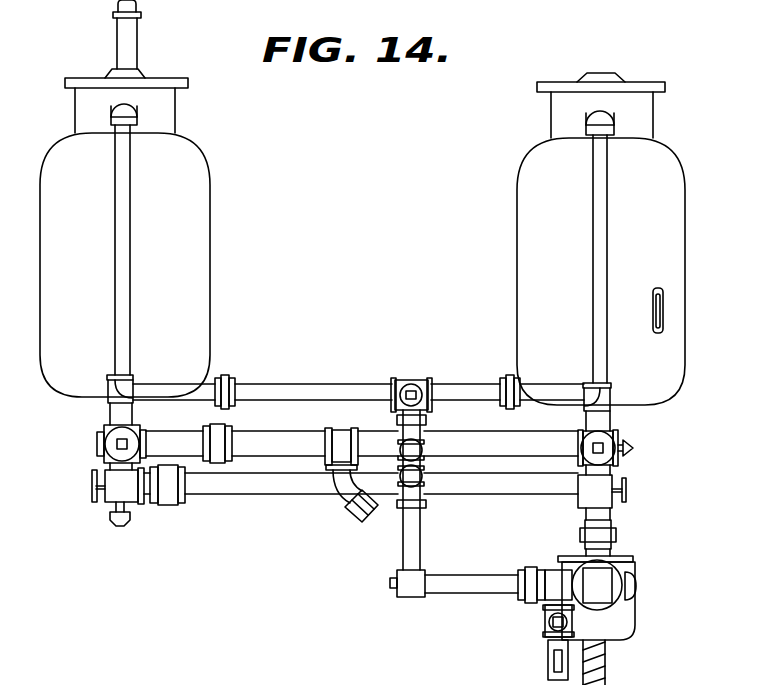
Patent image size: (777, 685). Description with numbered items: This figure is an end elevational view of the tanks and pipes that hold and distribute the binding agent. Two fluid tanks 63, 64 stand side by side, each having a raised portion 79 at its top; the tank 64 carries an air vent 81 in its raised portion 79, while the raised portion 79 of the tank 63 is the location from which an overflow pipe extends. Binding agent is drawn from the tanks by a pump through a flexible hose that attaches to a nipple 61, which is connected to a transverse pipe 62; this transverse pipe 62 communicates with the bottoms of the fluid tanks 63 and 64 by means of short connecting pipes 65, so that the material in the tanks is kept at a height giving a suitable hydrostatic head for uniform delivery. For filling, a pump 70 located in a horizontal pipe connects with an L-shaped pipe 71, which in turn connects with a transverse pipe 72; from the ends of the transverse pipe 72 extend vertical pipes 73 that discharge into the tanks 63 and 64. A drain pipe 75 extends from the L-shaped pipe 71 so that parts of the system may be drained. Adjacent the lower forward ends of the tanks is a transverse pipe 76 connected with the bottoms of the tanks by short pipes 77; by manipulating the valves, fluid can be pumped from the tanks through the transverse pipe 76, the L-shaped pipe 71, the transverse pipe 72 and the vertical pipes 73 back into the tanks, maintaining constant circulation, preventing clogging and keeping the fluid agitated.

The nipple 61 is at (342, 487).
The transverse pipe 62 is at (274, 449).
The fluid tank 63 is at (540, 290).
The fluid tank 64 is at (190, 313).
The short connecting pipe 65 is at (110, 417).
The pump 70 is at (613, 628).
The L-shaped pipe 71 is at (450, 582).
The transverse pipe 72 is at (318, 388).
The vertical pipe 73 is at (127, 252).
The drain pipe 75 is at (543, 633).
The transverse pipe 76 is at (508, 482).
The short pipe 77 is at (97, 470).
The raised portion 79 is at (160, 115).
The air vent 81 is at (133, 36).